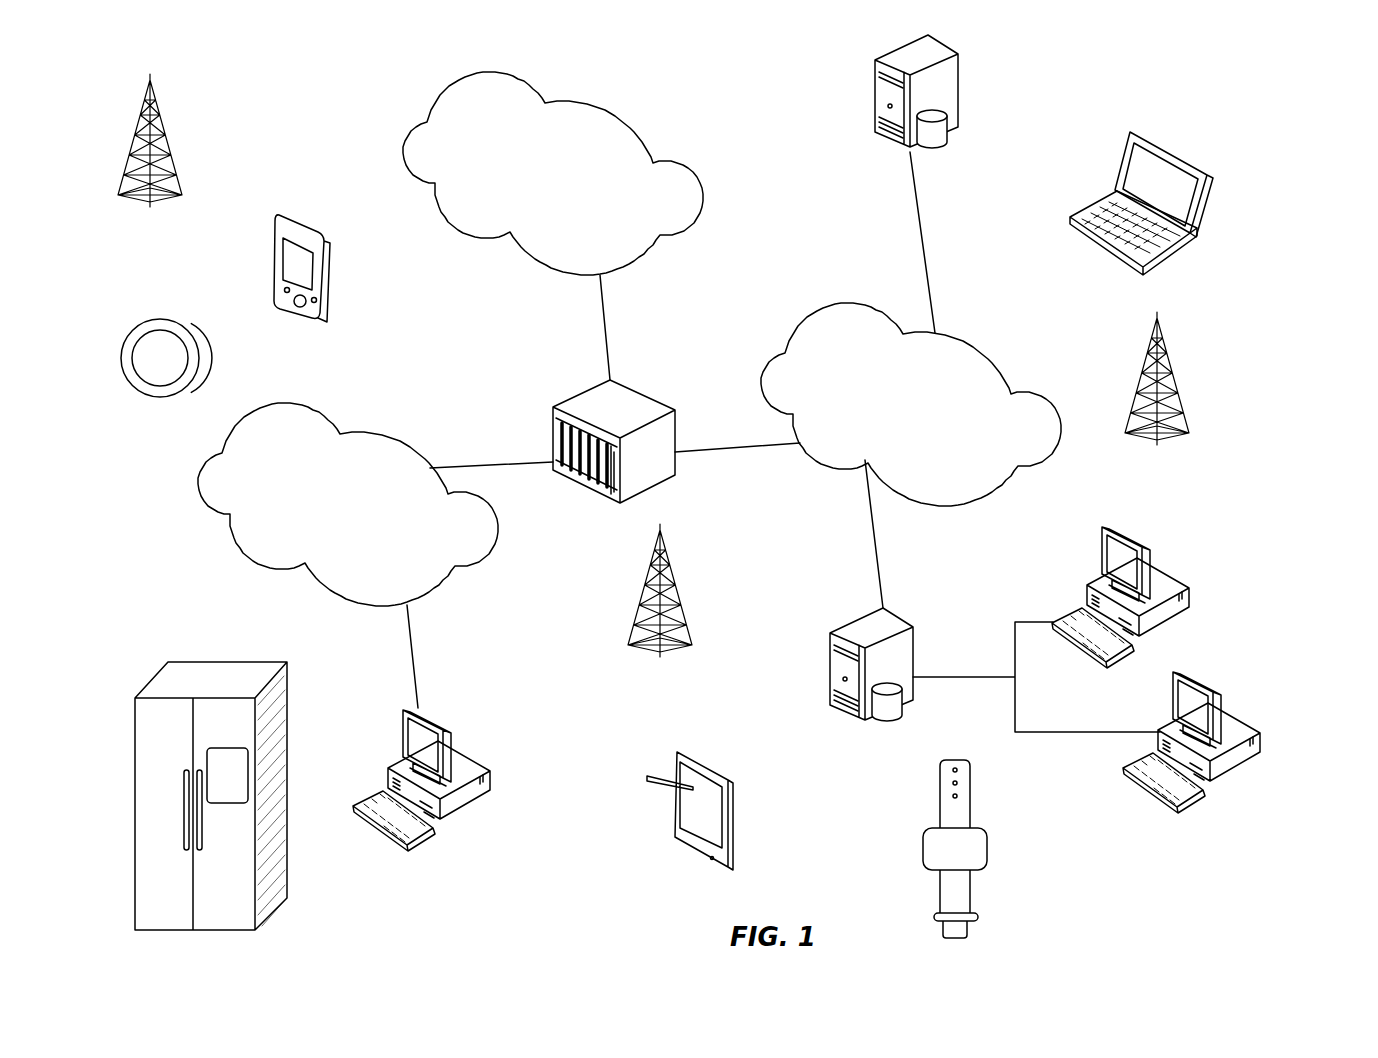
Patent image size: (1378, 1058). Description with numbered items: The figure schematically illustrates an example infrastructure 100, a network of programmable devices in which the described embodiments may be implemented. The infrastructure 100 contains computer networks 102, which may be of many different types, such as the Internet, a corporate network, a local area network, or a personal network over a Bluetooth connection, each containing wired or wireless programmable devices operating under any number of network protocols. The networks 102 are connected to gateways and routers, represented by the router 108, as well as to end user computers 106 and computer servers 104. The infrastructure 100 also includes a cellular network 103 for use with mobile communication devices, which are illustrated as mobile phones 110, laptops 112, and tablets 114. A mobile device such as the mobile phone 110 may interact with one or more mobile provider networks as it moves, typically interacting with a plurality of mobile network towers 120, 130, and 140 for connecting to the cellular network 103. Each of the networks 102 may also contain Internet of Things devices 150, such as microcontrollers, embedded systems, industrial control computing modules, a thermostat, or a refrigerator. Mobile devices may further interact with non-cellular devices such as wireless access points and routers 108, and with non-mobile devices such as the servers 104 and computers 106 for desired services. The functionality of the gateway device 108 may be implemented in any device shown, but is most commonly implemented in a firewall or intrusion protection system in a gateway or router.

The infrastructure 100 is at (1108, 97).
The computer networks 102 is at (644, 454).
The cellular network 103 is at (553, 169).
The computer servers 104 is at (839, 375).
The end user computers 106 is at (850, 670).
The gateways and routers 108 is at (642, 423).
The mobile phones 110 is at (340, 249).
The laptops 112 is at (1172, 196).
The tablets 114 is at (728, 794).
The mobile network tower 120 is at (660, 607).
The mobile network tower 130 is at (1157, 396).
The mobile network tower 140 is at (150, 156).
The Internet of Things devices 150 is at (598, 604).